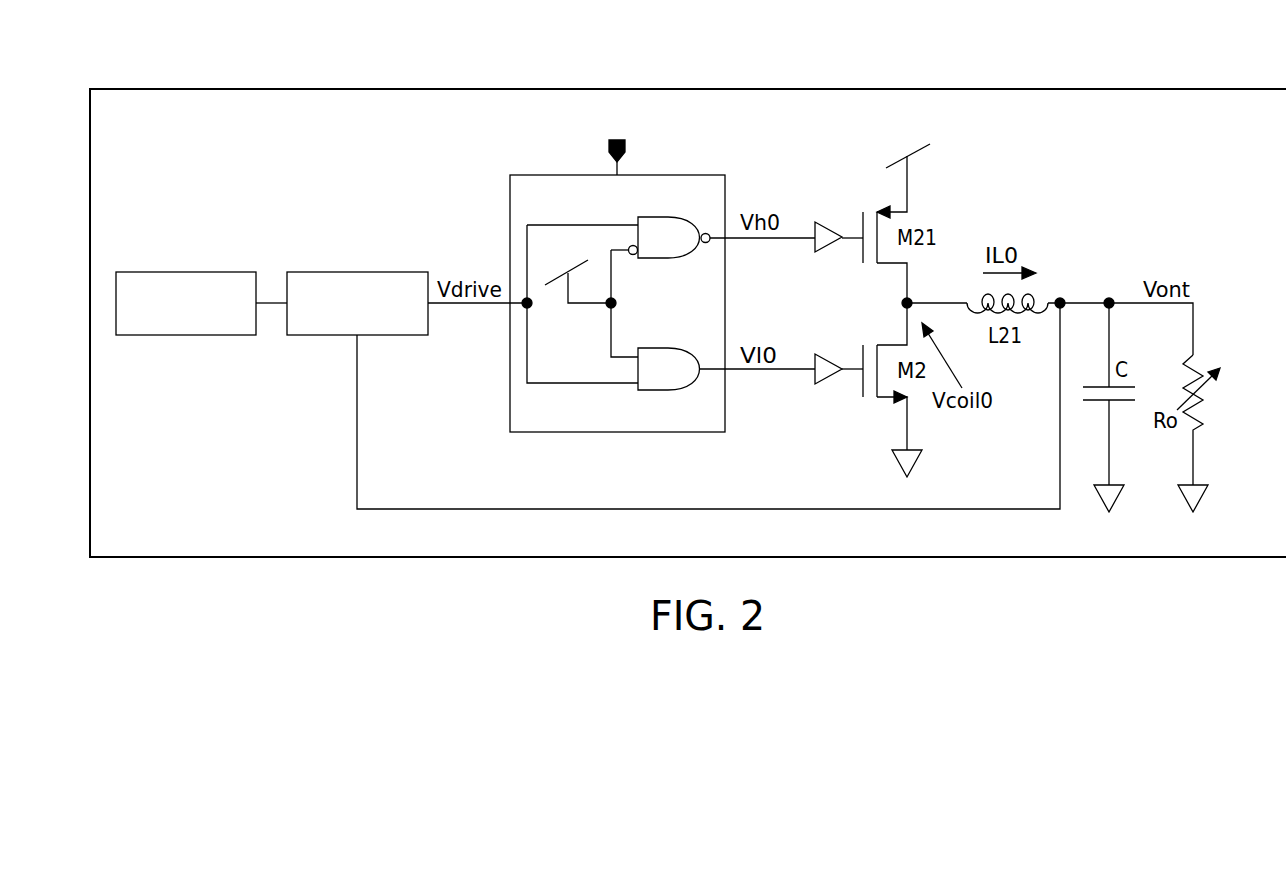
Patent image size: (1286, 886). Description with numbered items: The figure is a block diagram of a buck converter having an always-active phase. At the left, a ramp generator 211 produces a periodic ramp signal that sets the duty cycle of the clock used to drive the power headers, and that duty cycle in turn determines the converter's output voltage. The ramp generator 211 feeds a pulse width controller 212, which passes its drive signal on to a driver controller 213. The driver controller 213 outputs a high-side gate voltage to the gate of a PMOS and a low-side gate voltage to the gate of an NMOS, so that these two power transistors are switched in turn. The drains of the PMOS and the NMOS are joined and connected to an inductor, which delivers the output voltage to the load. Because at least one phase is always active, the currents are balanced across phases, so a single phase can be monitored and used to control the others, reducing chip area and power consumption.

The ramp generator 211 is at (187, 272).
The pulse width controller 212 is at (357, 272).
The driver controller 213 is at (510, 193).